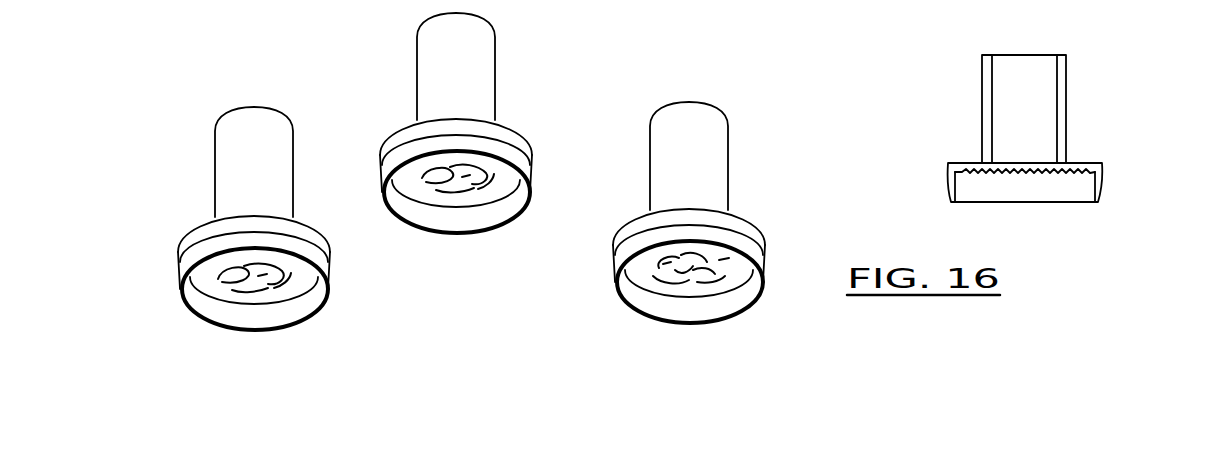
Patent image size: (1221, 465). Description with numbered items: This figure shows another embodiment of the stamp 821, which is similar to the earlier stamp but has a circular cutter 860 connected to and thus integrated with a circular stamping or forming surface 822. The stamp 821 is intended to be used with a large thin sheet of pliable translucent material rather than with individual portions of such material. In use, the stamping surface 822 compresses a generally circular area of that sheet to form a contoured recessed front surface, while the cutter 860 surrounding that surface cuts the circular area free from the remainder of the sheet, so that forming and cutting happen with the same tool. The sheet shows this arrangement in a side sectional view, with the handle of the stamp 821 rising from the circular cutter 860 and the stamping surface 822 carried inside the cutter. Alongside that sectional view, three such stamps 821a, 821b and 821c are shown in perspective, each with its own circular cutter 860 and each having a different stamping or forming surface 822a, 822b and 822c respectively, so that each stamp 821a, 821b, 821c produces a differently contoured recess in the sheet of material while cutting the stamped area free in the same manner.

The stamp 821 is at (1041, 164).
The stamp 821a is at (716, 260).
The stamp 821b is at (482, 171).
The stamp 821c is at (229, 231).
The stamping or forming surface 822 is at (1025, 173).
The stamping or forming surface 822a is at (680, 288).
The stamping or forming surface 822b is at (448, 200).
The stamping or forming surface 822c is at (247, 295).
The circular cutter 860 is at (229, 275).